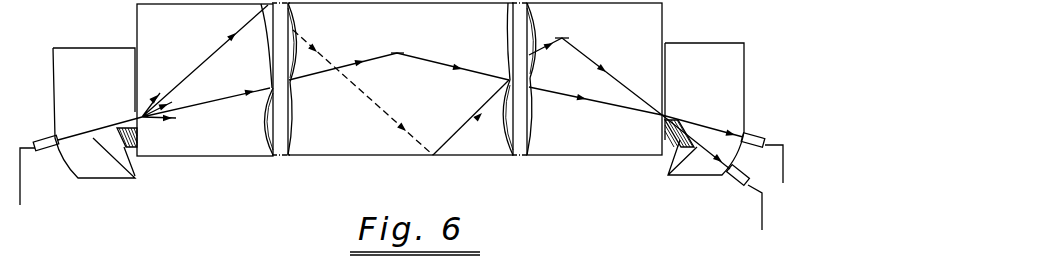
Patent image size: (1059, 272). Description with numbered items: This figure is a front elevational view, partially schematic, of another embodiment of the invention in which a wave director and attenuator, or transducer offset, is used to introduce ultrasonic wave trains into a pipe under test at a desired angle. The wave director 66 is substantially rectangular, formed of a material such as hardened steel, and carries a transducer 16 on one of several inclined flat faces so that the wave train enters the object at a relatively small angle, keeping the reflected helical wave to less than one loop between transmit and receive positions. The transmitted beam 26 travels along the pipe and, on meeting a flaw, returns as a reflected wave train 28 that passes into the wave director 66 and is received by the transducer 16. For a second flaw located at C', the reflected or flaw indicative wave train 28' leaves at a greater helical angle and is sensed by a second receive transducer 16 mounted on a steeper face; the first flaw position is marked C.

The transducer 16 is at (46, 138).
The light beam 26 is at (218, 99).
The reflected wave train 28 is at (399, 92).
The reflected or flaw indicative wave train 28' is at (595, 76).
The wave director 66 is at (706, 87).
The focal point C is at (397, 42).
The second flaw C' is at (564, 25).